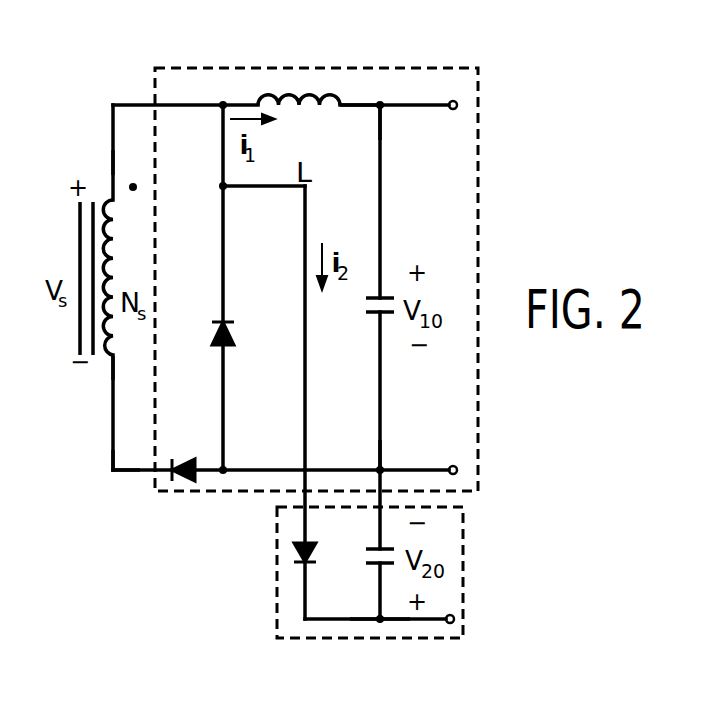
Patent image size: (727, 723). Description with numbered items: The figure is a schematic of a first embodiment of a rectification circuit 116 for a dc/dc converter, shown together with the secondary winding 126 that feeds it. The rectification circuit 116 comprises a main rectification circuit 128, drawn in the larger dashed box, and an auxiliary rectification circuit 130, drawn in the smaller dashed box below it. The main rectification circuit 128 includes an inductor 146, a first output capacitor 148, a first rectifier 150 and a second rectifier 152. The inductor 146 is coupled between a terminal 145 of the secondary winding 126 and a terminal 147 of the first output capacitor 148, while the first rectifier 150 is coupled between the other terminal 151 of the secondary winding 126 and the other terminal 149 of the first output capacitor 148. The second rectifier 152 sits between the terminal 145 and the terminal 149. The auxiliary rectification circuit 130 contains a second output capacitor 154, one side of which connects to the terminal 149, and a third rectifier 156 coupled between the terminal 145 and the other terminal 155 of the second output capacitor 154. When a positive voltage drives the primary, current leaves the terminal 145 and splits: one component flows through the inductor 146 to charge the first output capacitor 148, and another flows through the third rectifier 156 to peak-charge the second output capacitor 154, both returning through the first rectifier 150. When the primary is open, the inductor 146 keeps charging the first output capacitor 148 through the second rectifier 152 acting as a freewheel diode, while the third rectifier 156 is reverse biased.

The rectification circuit 116 is at (88, 70).
The secondary winding 126 is at (106, 362).
The main rectification circuit 128 is at (288, 67).
The auxiliary rectification circuit 130 is at (276, 572).
The terminal of the secondary winding 145 is at (111, 161).
The inductor 146 is at (340, 104).
The terminal of the first output capacitor 147 is at (383, 108).
The first output capacitor 148 is at (377, 315).
The other terminal of the first output capacitor 149 is at (383, 468).
The first rectifier 150 is at (181, 458).
The other terminal of the secondary winding 151 is at (126, 476).
The second rectifier 152 is at (236, 334).
The second output capacitor 154 is at (376, 548).
The other terminal of the second output capacitor 155 is at (378, 623).
The third rectifier 156 is at (307, 566).